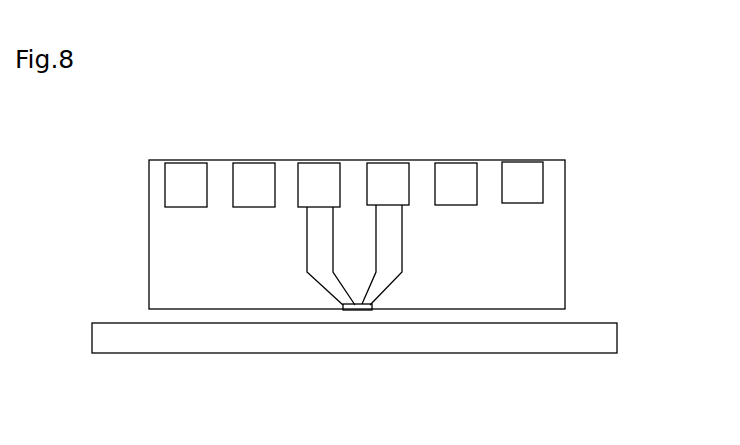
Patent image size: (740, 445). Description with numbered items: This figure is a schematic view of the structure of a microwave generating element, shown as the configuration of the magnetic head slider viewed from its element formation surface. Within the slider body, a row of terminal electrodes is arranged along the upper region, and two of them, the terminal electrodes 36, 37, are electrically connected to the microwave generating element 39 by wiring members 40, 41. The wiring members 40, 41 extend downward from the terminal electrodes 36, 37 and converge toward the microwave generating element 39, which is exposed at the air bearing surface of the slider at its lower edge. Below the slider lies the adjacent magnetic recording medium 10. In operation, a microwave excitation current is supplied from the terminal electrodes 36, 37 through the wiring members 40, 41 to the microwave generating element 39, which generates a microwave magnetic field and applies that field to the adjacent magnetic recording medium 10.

The magnetic recording medium 10 is at (605, 336).
The terminal electrode 36 is at (322, 175).
The terminal electrode 37 is at (388, 175).
The microwave generating element 39 is at (357, 308).
The wiring member 40 is at (315, 243).
The wiring member 41 is at (395, 233).